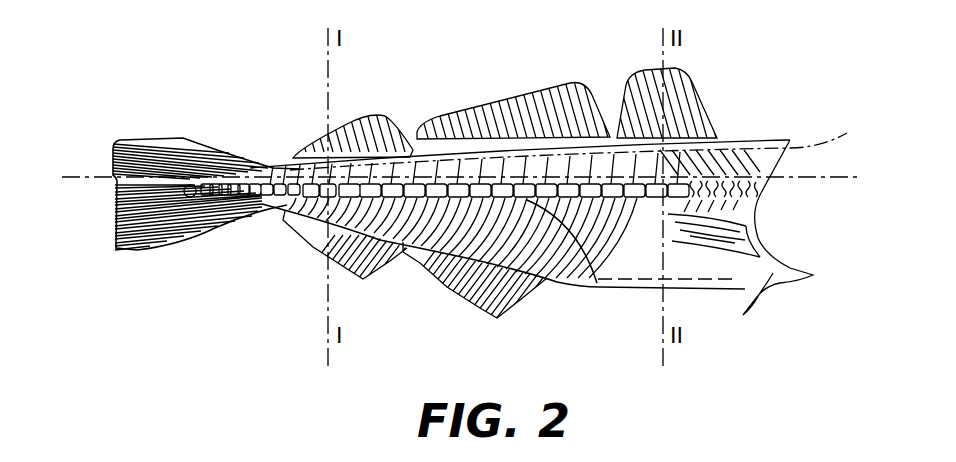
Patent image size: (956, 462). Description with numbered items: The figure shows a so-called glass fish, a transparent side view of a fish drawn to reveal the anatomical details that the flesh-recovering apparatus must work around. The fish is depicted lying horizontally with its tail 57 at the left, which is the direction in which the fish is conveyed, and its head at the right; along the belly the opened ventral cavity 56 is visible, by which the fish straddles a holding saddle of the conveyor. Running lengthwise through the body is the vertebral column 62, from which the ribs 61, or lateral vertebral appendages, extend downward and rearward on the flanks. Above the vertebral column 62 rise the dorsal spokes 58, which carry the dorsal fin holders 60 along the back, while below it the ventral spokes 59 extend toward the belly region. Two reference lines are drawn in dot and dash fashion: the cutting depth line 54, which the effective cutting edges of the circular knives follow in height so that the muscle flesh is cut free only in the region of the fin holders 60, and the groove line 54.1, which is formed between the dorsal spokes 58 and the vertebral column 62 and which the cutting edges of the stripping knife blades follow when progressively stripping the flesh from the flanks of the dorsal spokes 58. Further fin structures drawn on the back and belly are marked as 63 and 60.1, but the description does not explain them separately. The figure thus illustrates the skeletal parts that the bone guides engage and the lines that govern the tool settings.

The cutting depth line 54 is at (110, 163).
The groove line 54.1 is at (852, 176).
The ventral cavity 56 is at (604, 287).
The tail 57 is at (148, 250).
The dorsal spokes 58 is at (740, 139).
The ventral spokes 59 is at (282, 206).
The dorsal fin holders 60 is at (713, 118).
The anal fin 60.1 is at (548, 283).
The ribs 61 is at (606, 212).
The vertebral column 62 is at (766, 194).
The second dorsal fin 63 is at (548, 108).